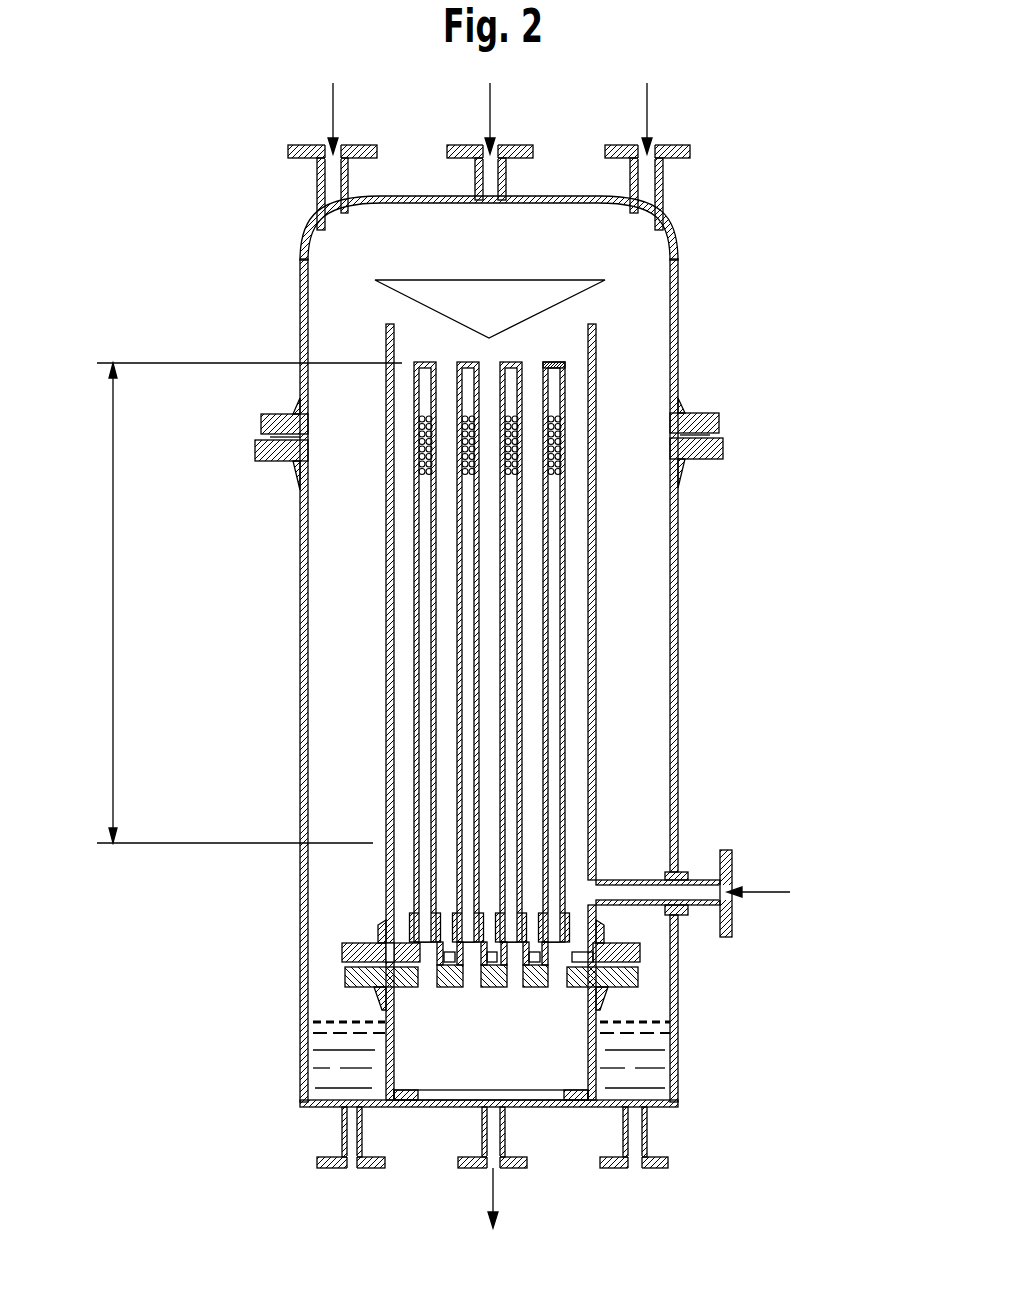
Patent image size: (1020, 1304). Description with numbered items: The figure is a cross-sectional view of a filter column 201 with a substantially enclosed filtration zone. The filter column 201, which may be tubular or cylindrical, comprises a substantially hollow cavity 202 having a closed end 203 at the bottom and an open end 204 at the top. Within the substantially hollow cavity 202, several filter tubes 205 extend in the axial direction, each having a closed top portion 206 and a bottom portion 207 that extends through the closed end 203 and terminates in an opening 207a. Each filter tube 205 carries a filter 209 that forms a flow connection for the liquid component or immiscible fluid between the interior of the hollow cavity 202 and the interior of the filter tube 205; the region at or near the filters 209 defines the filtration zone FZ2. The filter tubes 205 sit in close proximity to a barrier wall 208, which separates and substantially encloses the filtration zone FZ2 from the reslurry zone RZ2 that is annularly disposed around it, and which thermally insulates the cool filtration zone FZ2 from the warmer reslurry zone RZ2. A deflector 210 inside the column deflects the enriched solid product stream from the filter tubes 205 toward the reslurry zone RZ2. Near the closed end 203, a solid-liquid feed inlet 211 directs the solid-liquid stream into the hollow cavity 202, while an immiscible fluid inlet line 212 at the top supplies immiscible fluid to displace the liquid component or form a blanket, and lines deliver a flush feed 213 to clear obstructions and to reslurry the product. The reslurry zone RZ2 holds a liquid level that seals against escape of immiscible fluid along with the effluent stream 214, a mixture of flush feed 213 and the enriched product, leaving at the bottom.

The filter column 201 is at (528, 682).
The substantially hollow cavity 202 is at (630, 305).
The closed end 203 is at (598, 918).
The open end 204 is at (570, 341).
The filter tube 205 is at (415, 699).
The top portion 206 is at (414, 382).
The bottom portion 207 is at (418, 905).
The opening 207a is at (428, 982).
The barrier wall 208 is at (597, 683).
The filter 209 is at (414, 433).
The deflector 210 is at (418, 280).
The solid-liquid feed inlet 211 is at (770, 892).
The immiscible fluid inlet line 212 is at (487, 121).
The flush feed 213 is at (328, 115).
The effluent stream 214 is at (490, 1188).
The filtration zone FZ2 is at (113, 645).
The reslurry zone RZ2 is at (335, 1018).